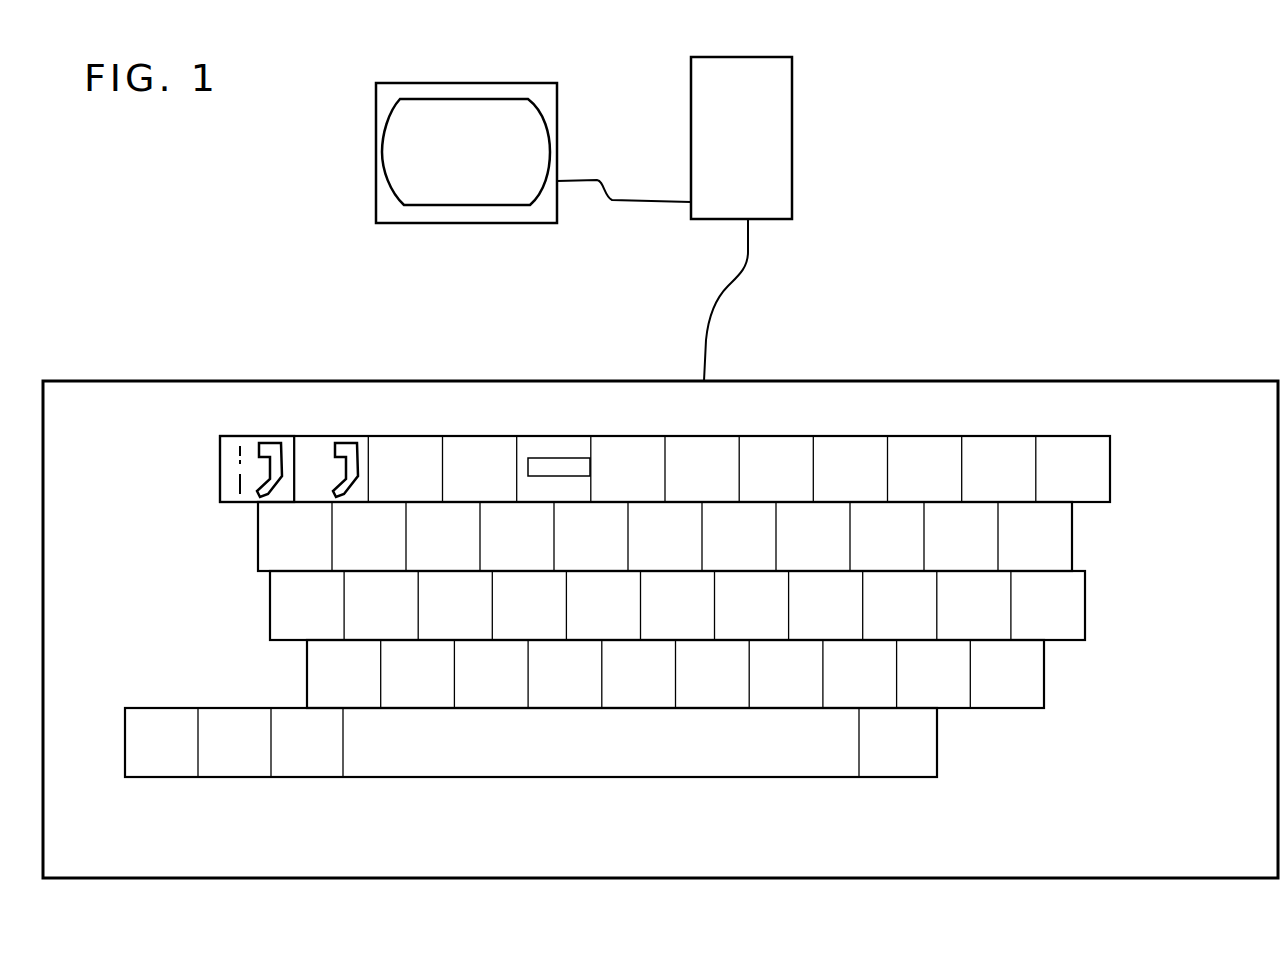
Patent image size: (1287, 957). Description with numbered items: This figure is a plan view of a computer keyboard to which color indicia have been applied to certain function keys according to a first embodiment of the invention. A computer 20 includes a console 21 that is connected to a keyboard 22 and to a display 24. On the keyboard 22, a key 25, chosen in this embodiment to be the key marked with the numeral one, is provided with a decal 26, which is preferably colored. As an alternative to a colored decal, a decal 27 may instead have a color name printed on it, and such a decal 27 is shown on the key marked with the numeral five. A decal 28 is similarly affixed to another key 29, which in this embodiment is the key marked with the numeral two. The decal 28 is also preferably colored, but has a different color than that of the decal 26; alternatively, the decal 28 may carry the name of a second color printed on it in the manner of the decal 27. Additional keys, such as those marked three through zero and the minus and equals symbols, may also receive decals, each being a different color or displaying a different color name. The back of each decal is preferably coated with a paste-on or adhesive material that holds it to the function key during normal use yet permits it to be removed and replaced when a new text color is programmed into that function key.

The computer 20 is at (1033, 228).
The console 21 is at (794, 100).
The keyboard 22 is at (1111, 380).
The display 24 is at (376, 140).
The key 25 is at (228, 467).
The decal 26 is at (273, 448).
The decal 27 is at (570, 455).
The decal 28 is at (347, 449).
The key 29 is at (311, 445).